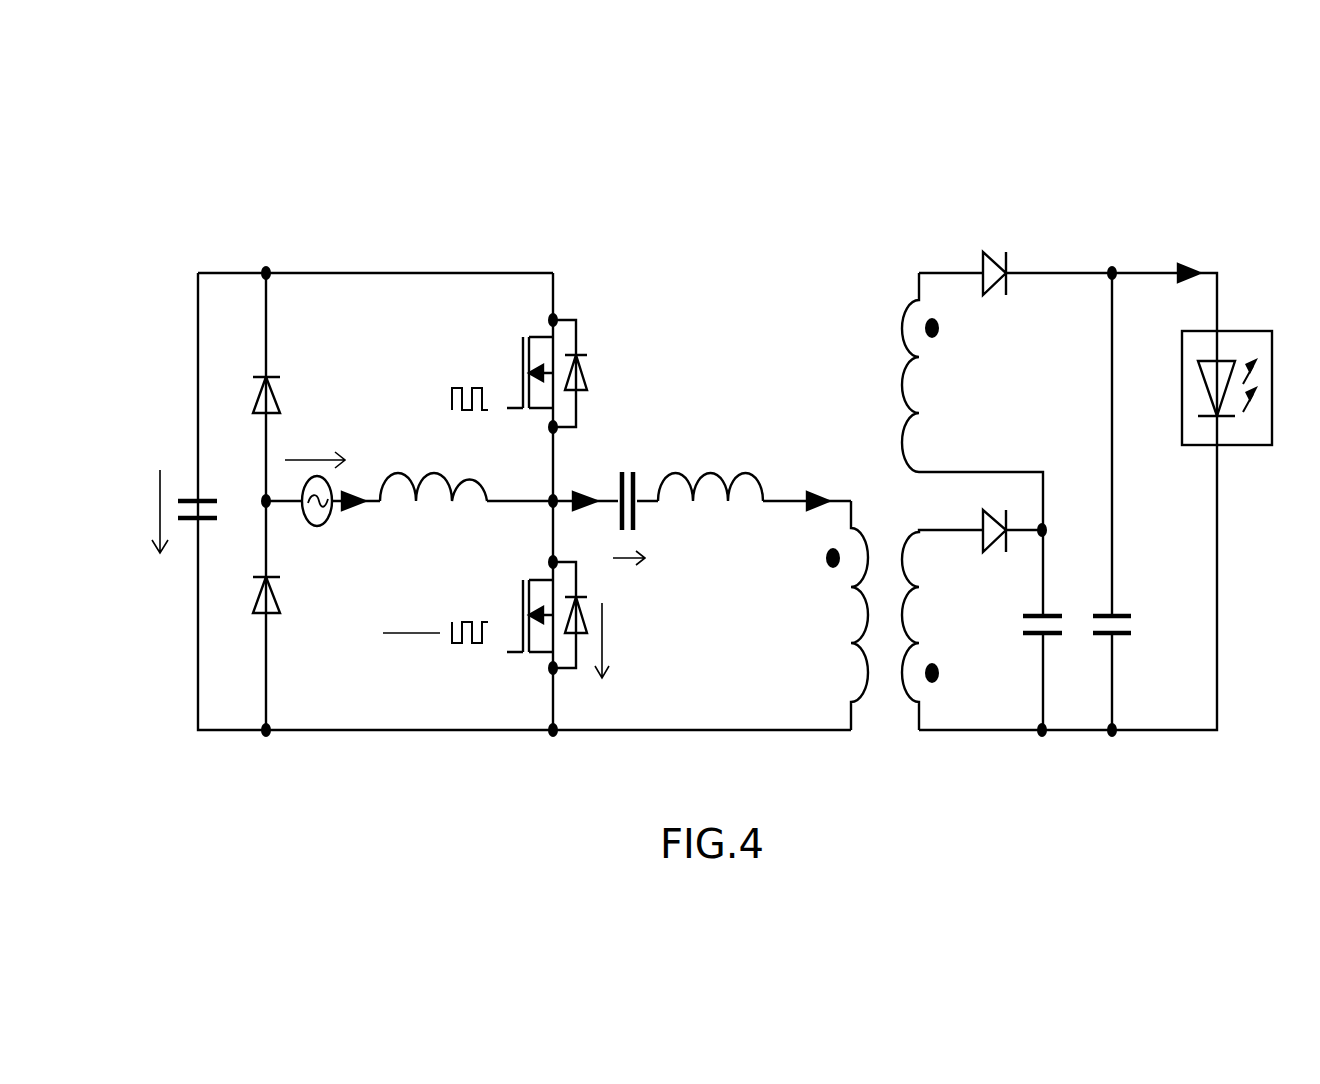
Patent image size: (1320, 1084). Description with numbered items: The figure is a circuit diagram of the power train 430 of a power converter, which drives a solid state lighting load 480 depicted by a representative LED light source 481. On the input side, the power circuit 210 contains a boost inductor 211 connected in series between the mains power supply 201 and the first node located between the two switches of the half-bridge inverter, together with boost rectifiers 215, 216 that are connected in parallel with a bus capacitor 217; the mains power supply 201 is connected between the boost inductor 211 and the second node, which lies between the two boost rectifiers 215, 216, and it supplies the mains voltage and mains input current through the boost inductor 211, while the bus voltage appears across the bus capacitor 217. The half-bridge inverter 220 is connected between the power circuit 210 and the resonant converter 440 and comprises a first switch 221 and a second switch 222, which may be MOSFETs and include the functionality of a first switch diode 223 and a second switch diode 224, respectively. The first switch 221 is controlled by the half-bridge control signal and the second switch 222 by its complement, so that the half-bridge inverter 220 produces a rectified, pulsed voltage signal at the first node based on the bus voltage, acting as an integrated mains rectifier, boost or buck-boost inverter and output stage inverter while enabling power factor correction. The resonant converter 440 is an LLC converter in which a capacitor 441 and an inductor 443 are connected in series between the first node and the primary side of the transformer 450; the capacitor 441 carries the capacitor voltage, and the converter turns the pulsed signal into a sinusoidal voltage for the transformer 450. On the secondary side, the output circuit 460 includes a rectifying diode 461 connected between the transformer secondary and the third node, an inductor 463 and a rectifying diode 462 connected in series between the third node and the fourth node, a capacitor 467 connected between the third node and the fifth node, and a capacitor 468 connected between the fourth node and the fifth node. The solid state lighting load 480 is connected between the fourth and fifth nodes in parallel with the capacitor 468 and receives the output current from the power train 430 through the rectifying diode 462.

The power train 430 is at (737, 171).
The power circuit 210 is at (258, 262).
The boost rectifier 215 is at (290, 395).
The boost rectifier 216 is at (290, 595).
The bus capacitor 217 is at (208, 493).
The mains power supply 201 is at (322, 517).
The boost inductor 211 is at (433, 507).
The half-bridge inverter 220 is at (522, 262).
The first switch 221 is at (518, 372).
The second switch 222 is at (518, 612).
The first switch diode 223 is at (591, 373).
The second switch diode 224 is at (584, 615).
The resonant converter 440 is at (699, 402).
The capacitor 441 is at (626, 490).
The inductor 443 is at (710, 507).
The transformer 450 is at (840, 475).
The output circuit 460 is at (948, 262).
The rectifying diode 461 is at (999, 545).
The rectifying diode 462 is at (999, 291).
The inductor 463 is at (934, 389).
The capacitor 467 is at (1029, 642).
The capacitor 468 is at (1099, 642).
The solid state lighting load 480 is at (1197, 381).
The LED light source 481 is at (1195, 385).